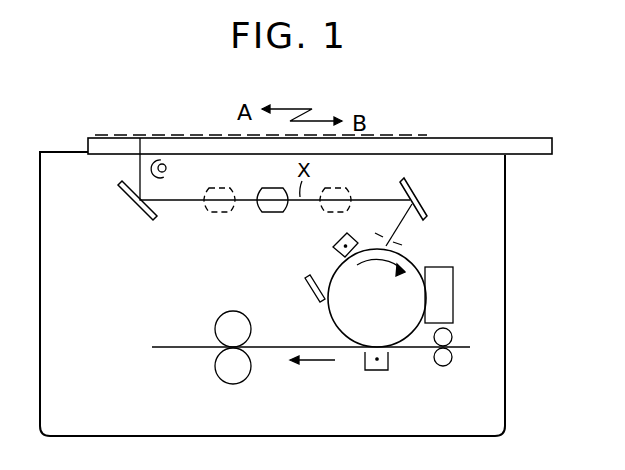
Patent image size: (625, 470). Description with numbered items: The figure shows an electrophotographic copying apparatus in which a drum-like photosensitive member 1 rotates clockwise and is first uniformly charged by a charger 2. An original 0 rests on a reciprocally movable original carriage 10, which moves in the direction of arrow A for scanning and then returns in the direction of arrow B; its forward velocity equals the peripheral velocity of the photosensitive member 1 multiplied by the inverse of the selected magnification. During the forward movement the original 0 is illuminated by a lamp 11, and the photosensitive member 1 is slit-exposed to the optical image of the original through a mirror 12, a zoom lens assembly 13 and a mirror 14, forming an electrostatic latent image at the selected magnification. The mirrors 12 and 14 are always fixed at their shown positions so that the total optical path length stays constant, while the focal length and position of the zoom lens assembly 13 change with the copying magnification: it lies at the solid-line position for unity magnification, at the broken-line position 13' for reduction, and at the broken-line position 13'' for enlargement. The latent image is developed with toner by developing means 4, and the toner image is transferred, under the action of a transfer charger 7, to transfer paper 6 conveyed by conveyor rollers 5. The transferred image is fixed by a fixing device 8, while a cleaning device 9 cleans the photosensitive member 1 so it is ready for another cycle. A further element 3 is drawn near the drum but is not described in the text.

The original 0 is at (100, 133).
The electrophotographic photosensitive member 1 is at (340, 319).
The charger 2 is at (333, 248).
The eraser lamp 3 is at (405, 238).
The developing means 4 is at (455, 291).
The conveyor rollers 5 is at (444, 367).
The transfer paper 6 is at (267, 355).
The transfer charger 7 is at (377, 371).
The fixing device 8 is at (235, 385).
The cleaning device 9 is at (305, 292).
The original carriage 10 is at (510, 147).
The lamp 11 is at (172, 165).
The mirror 12 is at (137, 205).
The zoom lens assembly 13 is at (262, 231).
The broken-line position of zoom lens assembly 13' is at (320, 218).
The broken-line position of zoom lens assembly 13'' is at (219, 231).
The mirror 14 is at (413, 192).